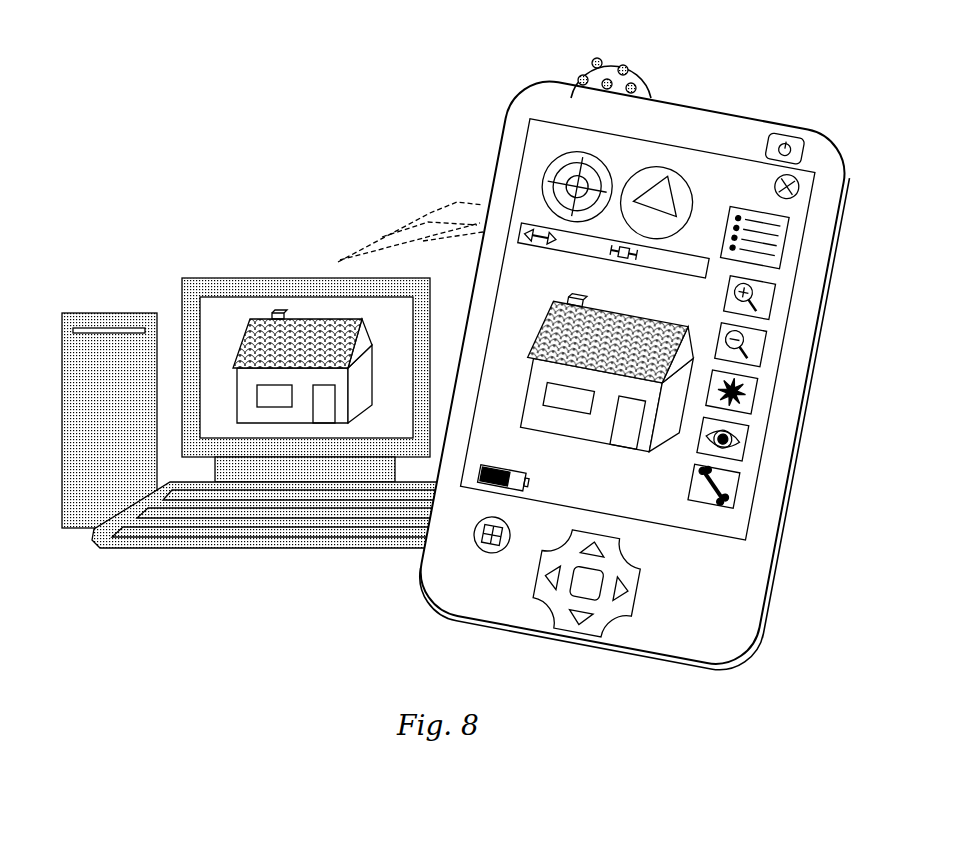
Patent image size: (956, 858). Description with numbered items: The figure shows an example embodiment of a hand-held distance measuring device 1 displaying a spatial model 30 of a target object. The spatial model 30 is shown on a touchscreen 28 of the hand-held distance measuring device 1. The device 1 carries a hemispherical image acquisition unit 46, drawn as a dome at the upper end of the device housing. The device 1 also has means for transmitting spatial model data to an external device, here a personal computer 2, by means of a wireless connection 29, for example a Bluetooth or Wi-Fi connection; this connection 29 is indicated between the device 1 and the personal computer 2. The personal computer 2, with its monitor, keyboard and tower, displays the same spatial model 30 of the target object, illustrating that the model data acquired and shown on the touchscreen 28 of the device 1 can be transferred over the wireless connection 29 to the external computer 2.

The hand-held distance measuring device 1 is at (611, 375).
The personal computer 2 is at (251, 394).
The touchscreen 28 is at (603, 329).
The wireless connection 29 is at (409, 227).
The spatial model 30 is at (503, 460).
The hemispherical image acquisition unit 46 is at (584, 67).